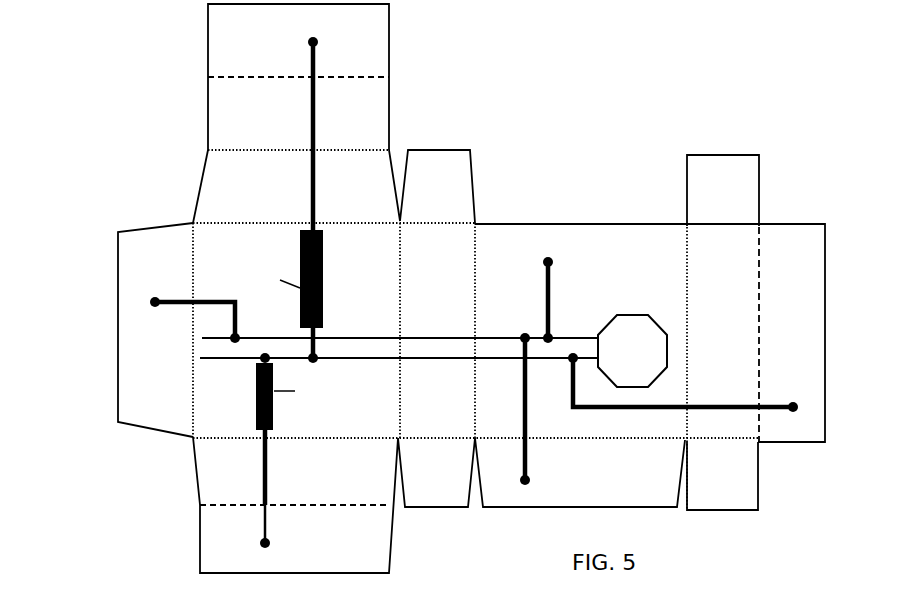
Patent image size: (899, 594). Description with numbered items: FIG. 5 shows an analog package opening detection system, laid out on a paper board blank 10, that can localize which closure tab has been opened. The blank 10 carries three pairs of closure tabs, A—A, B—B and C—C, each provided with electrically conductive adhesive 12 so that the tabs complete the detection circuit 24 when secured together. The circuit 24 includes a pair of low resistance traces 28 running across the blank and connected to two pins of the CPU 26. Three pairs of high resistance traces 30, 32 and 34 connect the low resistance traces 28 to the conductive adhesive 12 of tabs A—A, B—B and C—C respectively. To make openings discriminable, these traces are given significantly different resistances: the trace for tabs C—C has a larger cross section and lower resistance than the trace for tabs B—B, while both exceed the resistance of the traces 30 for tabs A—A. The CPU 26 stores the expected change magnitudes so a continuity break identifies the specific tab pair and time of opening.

The blank 10 is at (558, 110).
The electrically conductive adhesive 12 is at (157, 258).
The circuit 24 is at (380, 307).
The CPU 26 is at (626, 337).
The low resistance traces 28 is at (460, 358).
The high resistance traces 30 is at (160, 300).
The high resistance traces 32 is at (258, 465).
The high resistance traces 34 is at (315, 128).